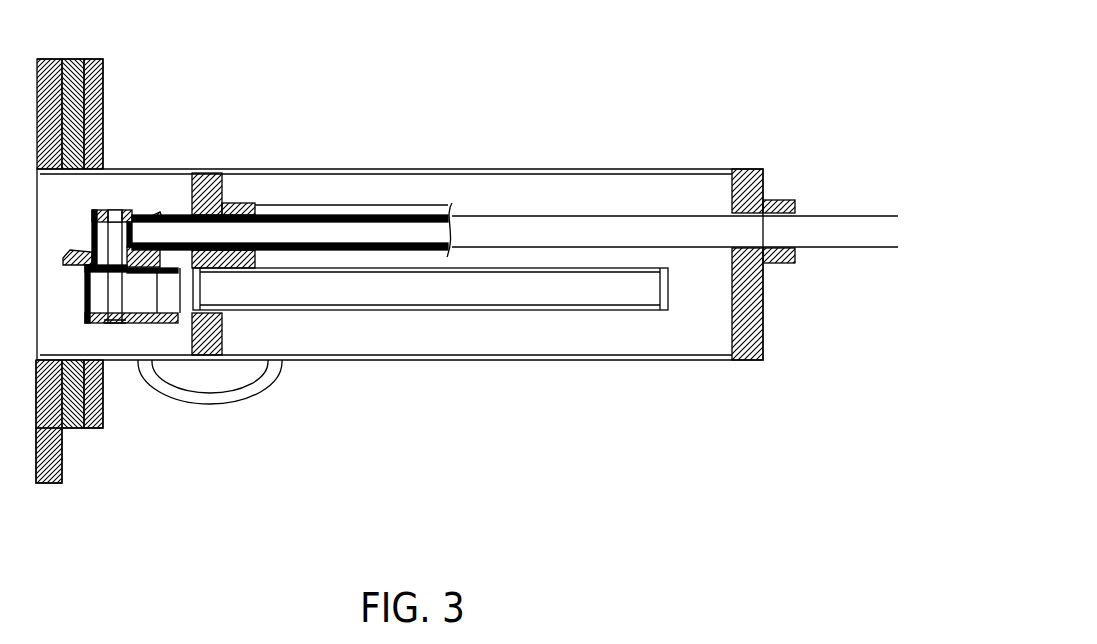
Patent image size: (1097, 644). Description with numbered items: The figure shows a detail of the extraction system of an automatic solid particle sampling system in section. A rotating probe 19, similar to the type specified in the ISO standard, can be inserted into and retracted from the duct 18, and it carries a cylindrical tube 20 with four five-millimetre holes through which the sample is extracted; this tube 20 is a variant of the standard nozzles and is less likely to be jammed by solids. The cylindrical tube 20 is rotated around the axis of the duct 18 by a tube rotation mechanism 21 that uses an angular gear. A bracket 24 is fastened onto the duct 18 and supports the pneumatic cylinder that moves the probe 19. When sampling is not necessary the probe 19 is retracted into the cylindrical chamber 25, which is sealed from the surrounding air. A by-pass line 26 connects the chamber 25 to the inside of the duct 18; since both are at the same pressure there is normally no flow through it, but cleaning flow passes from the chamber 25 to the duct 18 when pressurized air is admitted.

The duct 18 is at (62, 455).
The rotating probe 19 is at (490, 216).
The cylindrical tube 20 is at (383, 313).
The tube rotation mechanism 21 is at (157, 247).
The bracket 24 is at (105, 108).
The cylindrical chamber 25 is at (532, 362).
The by-pass line 26 is at (238, 400).